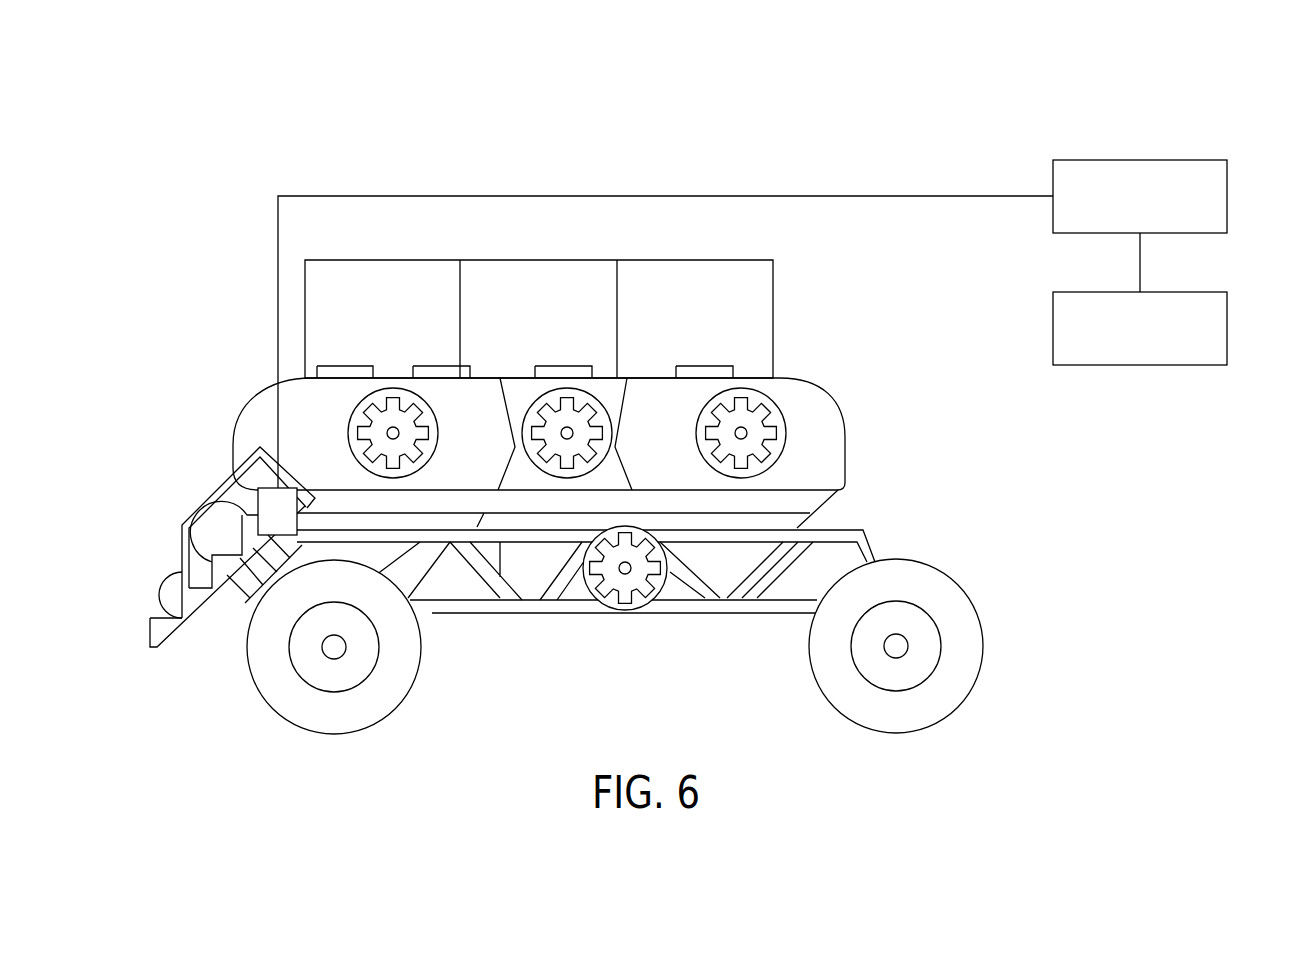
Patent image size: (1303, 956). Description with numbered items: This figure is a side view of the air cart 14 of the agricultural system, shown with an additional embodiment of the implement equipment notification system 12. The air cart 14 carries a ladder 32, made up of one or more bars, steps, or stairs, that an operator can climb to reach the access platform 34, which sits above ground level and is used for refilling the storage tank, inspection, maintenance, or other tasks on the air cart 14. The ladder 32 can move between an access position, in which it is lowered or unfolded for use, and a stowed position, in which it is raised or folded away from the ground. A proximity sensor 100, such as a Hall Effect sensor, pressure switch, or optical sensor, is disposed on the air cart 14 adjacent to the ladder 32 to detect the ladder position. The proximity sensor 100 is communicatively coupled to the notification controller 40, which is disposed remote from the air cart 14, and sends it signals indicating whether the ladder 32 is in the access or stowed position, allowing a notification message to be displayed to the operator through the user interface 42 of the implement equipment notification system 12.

The implement equipment notification system 12 is at (1000, 90).
The air cart 14 is at (790, 378).
The ladder 32 is at (165, 632).
The access platform 34 is at (418, 246).
The notification controller 40 is at (1227, 200).
The user interface 42 is at (1227, 330).
The proximity sensor 100 is at (190, 540).